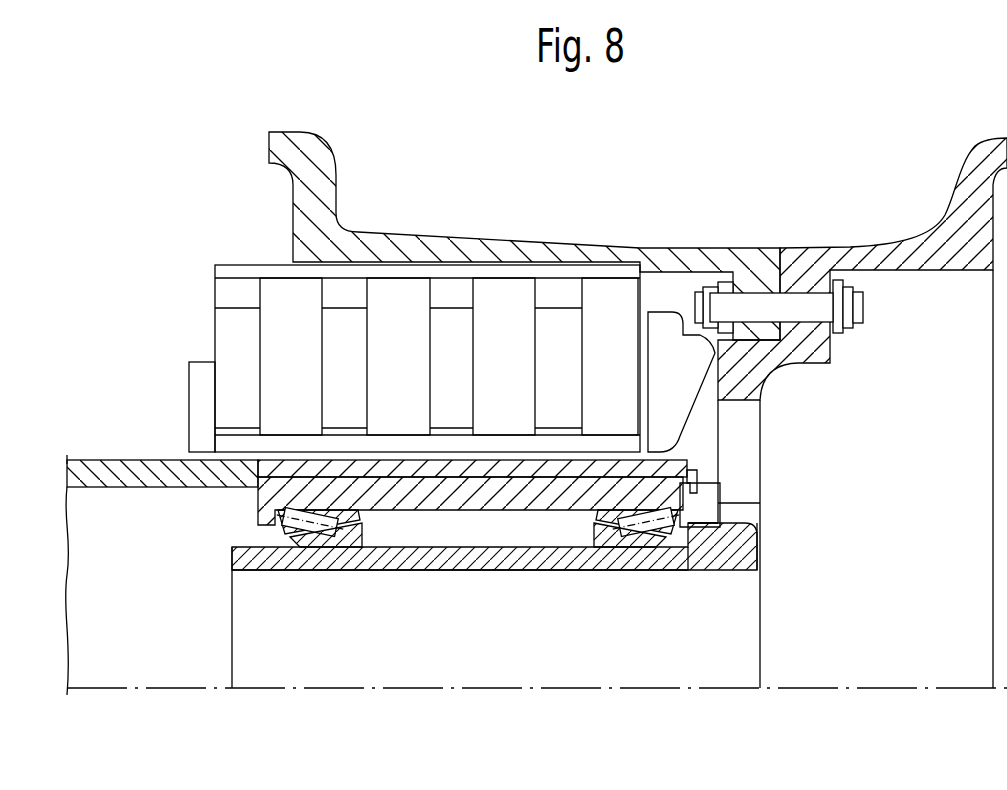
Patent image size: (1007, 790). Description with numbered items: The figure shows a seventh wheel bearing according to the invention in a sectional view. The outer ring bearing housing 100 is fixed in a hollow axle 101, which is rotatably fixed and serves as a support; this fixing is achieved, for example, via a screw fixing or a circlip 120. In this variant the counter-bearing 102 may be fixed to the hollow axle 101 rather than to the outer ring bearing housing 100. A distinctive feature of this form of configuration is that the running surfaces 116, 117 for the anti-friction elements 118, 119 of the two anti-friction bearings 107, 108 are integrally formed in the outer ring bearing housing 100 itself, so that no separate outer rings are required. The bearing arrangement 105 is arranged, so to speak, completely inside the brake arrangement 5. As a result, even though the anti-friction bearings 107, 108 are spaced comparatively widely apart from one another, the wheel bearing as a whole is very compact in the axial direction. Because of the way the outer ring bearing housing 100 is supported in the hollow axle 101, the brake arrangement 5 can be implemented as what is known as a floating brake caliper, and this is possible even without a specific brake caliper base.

The brake arrangement 5 is at (397, 308).
The outer ring bearing housing 100 is at (262, 493).
The hollow axle 101 is at (120, 475).
The counter-bearing 102 is at (658, 315).
The bearing arrangement 105 is at (497, 587).
The anti-friction bearing 107 is at (332, 563).
The anti-friction bearing 108 is at (632, 564).
The running surface 116 is at (288, 568).
The running surface 117 is at (668, 567).
The anti-friction element 118 is at (373, 567).
The anti-friction element 119 is at (593, 567).
The circlip 120 is at (697, 486).